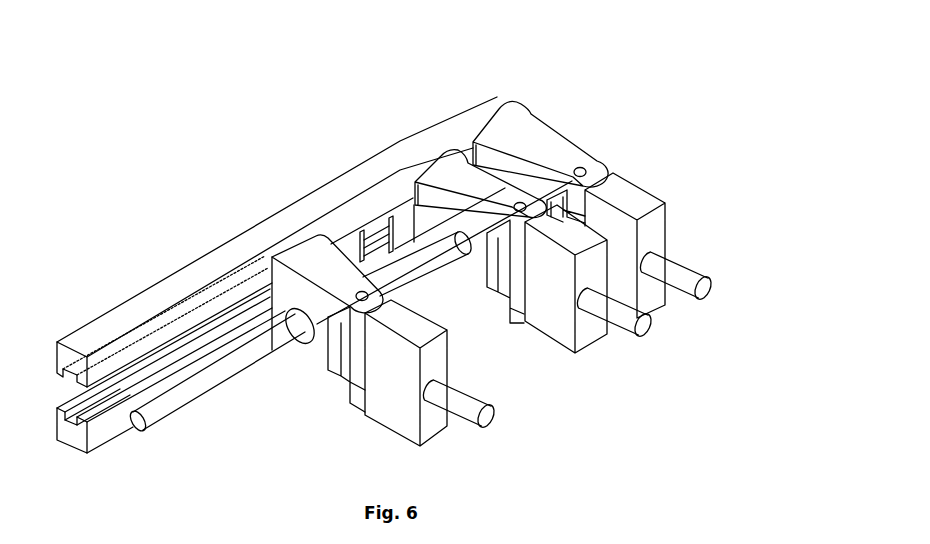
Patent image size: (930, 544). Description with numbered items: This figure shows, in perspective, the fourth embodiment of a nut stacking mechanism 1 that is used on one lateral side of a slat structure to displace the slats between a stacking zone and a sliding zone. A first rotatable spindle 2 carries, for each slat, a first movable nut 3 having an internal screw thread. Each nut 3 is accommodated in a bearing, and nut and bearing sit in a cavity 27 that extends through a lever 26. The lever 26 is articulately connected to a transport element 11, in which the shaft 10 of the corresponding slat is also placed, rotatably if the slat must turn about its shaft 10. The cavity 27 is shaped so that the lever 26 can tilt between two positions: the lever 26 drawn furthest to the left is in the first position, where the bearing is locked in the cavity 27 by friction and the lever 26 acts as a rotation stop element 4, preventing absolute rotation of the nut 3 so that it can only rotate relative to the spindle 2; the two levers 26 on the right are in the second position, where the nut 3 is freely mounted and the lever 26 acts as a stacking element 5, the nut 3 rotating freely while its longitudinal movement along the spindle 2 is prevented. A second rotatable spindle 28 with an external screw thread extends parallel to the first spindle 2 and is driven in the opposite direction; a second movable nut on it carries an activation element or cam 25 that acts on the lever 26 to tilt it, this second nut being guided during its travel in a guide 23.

The nut stacking mechanism 1 is at (164, 214).
The first rotatable spindle 2 is at (197, 395).
The first movable nut 3 is at (463, 252).
The rotation stop element 4 is at (310, 254).
The stacking element 5 is at (447, 177).
The shaft 10 is at (468, 415).
The transport element 11 is at (632, 190).
The guide 23 is at (115, 317).
The activation element or cam 25 is at (383, 221).
The lever 26 is at (550, 143).
The cavity 27 is at (270, 298).
The second rotatable spindle 28 is at (100, 387).